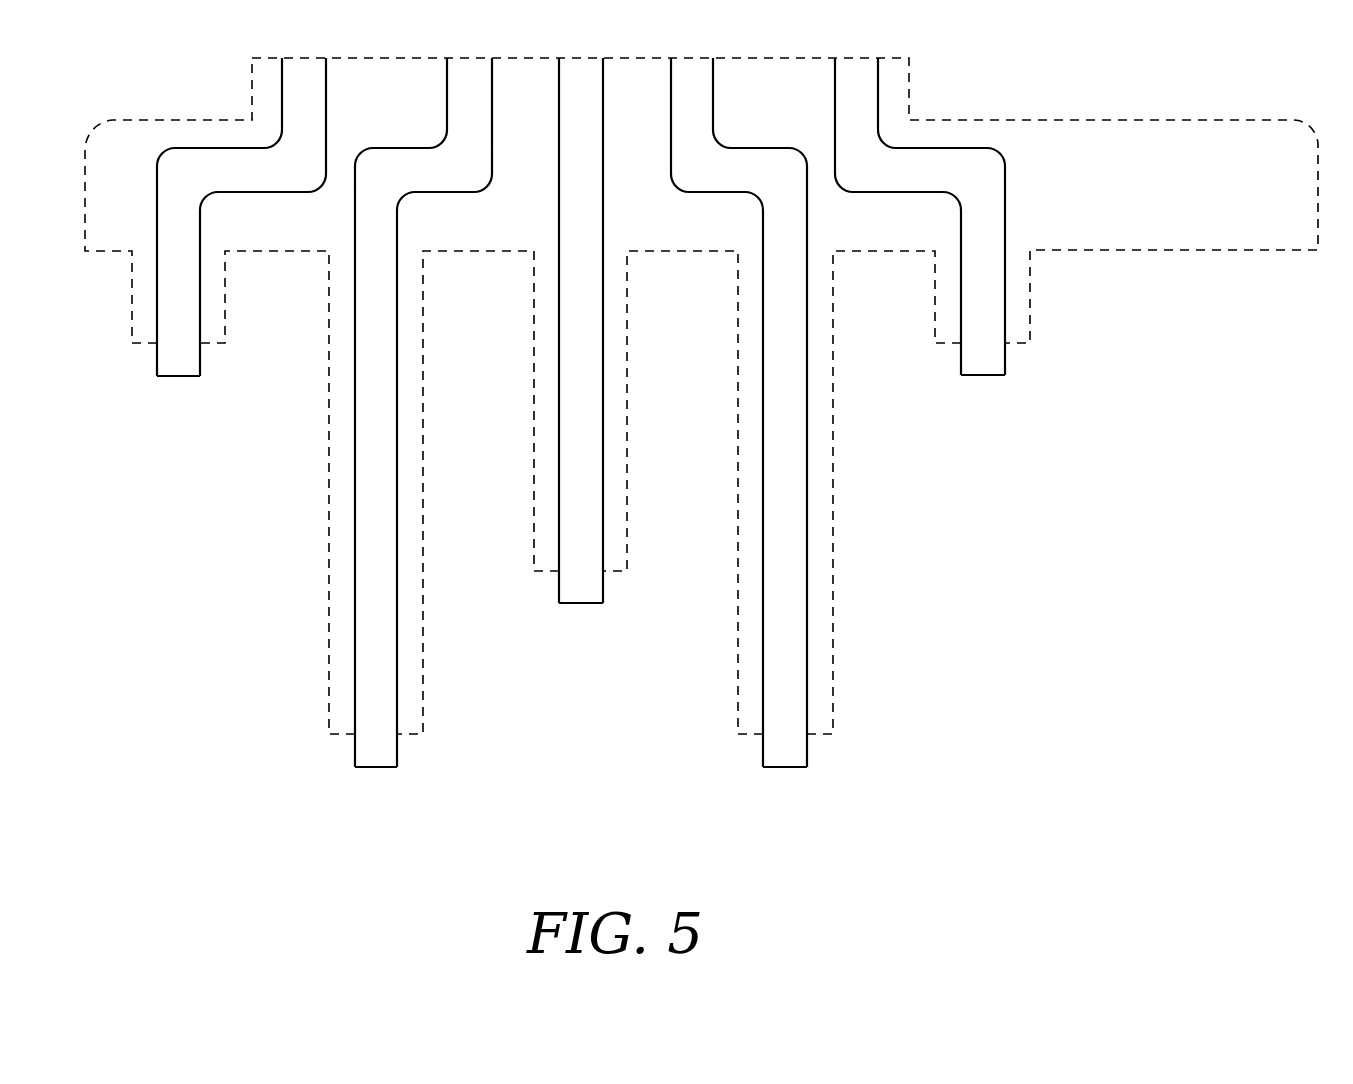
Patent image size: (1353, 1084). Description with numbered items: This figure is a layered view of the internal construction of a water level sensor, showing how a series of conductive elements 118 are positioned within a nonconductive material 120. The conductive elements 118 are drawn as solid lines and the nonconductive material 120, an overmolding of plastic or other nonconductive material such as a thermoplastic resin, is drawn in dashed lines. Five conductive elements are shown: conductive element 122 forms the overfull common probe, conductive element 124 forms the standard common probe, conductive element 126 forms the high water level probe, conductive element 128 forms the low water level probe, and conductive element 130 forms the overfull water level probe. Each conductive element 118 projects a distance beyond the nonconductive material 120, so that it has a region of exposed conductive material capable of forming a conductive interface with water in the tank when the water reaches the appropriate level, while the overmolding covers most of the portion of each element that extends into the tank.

The conductive elements 118 is at (183, 377).
The nonconductive material 120 is at (93, 252).
The conductive element 122 is at (167, 378).
The conductive element 124 is at (390, 768).
The conductive element 126 is at (595, 605).
The conductive element 128 is at (800, 768).
The conductive element 130 is at (995, 378).